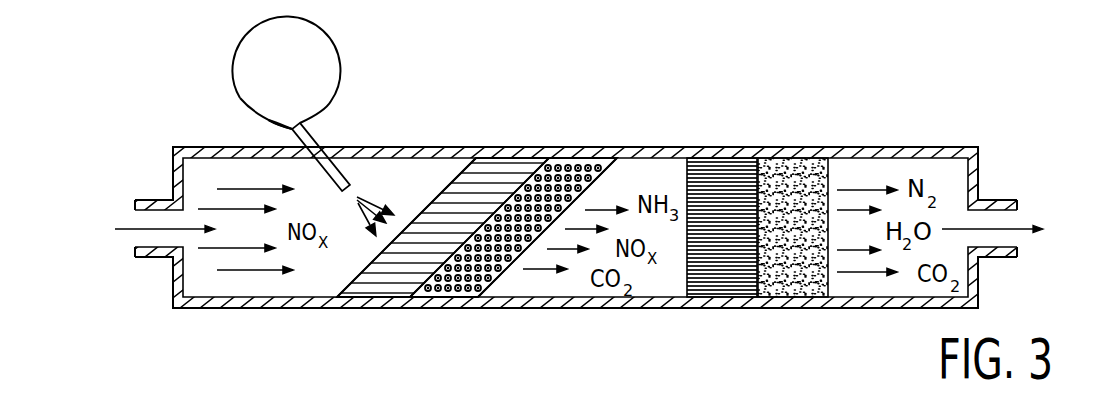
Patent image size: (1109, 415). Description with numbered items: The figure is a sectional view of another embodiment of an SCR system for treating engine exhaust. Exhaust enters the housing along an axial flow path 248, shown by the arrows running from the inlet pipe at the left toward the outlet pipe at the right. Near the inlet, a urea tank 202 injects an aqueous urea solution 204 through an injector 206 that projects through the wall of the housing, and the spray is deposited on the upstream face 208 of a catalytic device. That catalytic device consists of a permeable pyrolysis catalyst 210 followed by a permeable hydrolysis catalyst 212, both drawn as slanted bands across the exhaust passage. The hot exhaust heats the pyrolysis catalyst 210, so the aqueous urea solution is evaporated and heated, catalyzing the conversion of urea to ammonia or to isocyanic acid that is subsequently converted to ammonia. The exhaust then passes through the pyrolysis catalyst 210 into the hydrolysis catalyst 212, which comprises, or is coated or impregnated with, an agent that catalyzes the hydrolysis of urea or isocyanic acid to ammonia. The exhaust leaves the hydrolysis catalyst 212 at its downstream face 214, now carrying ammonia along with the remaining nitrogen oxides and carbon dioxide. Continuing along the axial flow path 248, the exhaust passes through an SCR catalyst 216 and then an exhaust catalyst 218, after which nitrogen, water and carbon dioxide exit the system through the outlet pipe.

The urea tank 202 is at (341, 68).
The aqueous urea solution 204 is at (373, 203).
The injector 206 is at (351, 148).
The upstream face 208 is at (451, 158).
The permeable pyrolysis catalyst 210 is at (383, 291).
The permeable hydrolysis catalyst 212 is at (466, 289).
The downstream face 214 is at (498, 278).
The SCR catalyst 216 is at (729, 163).
The exhaust catalyst 218 is at (800, 293).
The axial flow path 248 is at (127, 231).